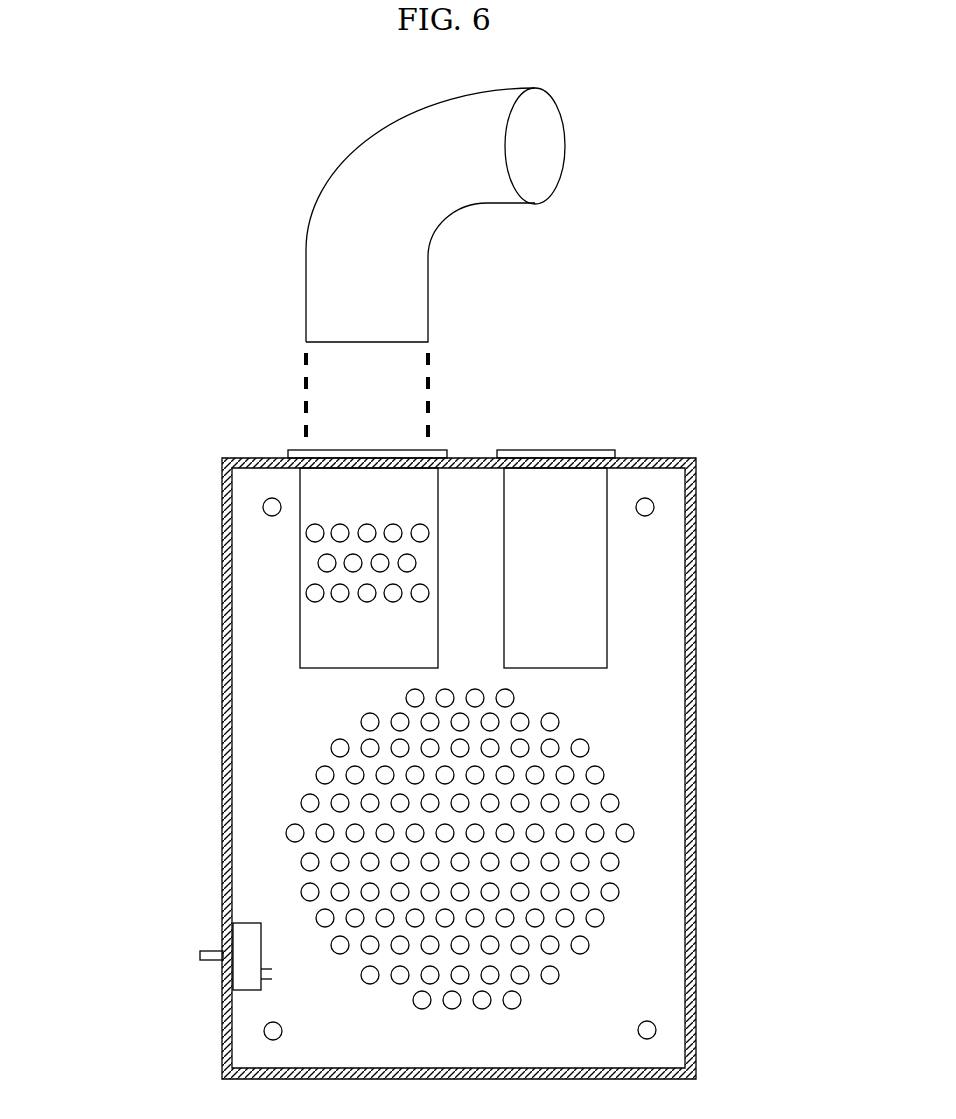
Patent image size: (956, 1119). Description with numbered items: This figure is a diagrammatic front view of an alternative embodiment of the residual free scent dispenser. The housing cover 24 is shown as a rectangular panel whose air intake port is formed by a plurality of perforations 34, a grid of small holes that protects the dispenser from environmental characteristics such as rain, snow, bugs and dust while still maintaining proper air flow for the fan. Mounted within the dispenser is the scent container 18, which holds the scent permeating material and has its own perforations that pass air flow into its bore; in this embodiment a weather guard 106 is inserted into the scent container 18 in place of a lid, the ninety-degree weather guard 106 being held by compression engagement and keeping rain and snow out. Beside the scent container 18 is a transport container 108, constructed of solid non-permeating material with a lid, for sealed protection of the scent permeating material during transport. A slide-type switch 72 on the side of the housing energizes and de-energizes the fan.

The weather guard 106 is at (317, 293).
The scent container 18 is at (338, 495).
The transport container 108 is at (565, 515).
The housing cover 24 is at (260, 718).
The plurality of perforations 34 is at (619, 802).
The switch 72 is at (200, 952).